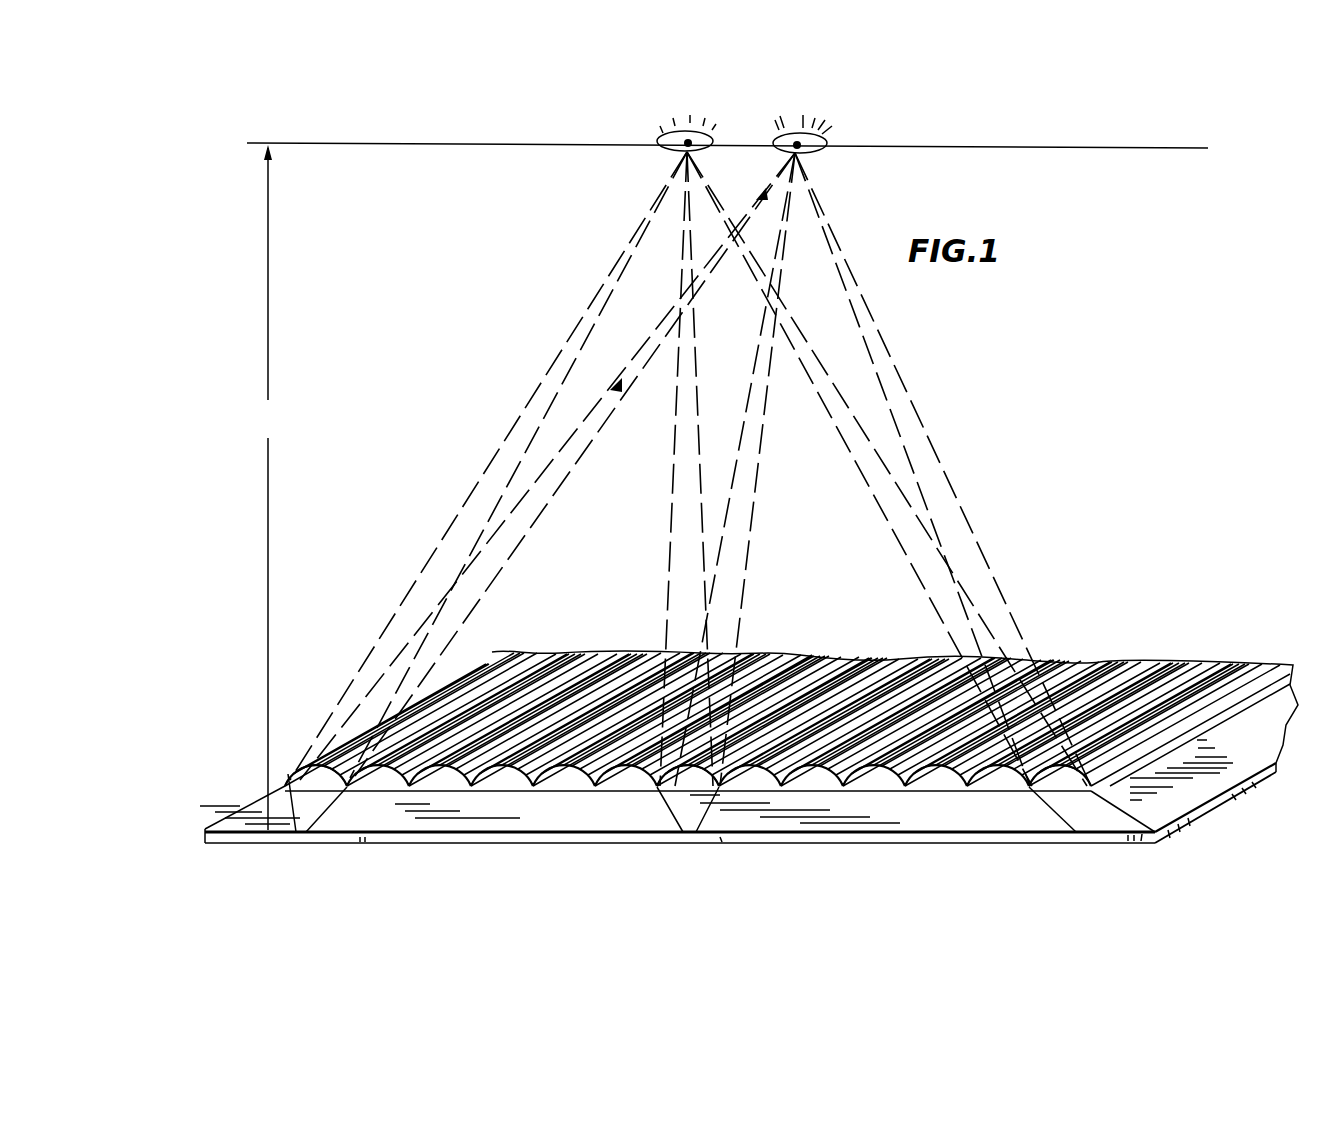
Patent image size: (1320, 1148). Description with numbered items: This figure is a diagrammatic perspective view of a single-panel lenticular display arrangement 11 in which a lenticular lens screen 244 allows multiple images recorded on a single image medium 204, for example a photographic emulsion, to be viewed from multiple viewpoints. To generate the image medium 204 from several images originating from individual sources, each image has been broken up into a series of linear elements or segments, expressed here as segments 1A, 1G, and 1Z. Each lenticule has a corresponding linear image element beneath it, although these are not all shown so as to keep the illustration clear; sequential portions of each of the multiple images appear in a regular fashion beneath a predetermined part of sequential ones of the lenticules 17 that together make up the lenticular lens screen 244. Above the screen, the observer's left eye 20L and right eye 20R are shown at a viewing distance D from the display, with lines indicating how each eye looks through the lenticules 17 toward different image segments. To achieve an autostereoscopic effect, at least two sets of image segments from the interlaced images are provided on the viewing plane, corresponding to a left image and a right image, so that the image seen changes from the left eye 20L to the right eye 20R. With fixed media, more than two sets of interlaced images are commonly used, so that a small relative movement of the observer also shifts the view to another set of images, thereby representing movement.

The linear image element 1A is at (300, 844).
The linear image element 1G is at (688, 846).
The linear image element 1Z is at (1088, 793).
The single-panel lenticular display arrangement 11 is at (220, 673).
The lenticules 17 is at (468, 678).
The right eye 20R is at (668, 145).
The left eye 20L is at (828, 147).
The image medium 204 is at (210, 840).
The lenticular lens screen 244 is at (735, 786).
The viewing distance D is at (269, 487).